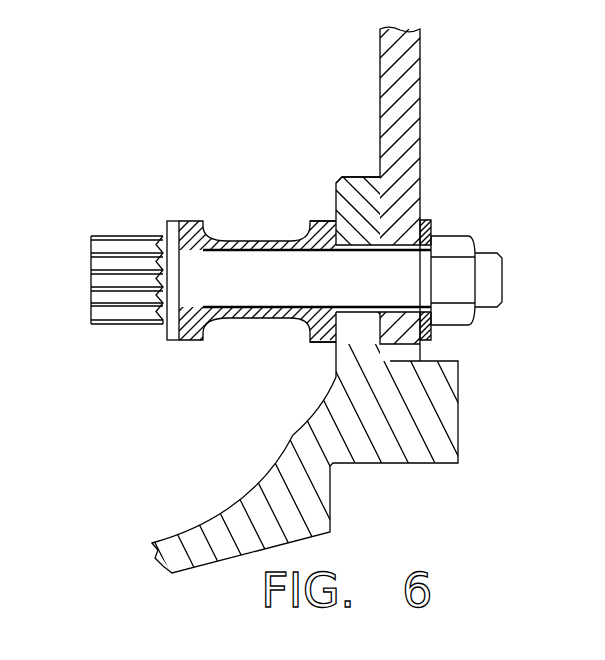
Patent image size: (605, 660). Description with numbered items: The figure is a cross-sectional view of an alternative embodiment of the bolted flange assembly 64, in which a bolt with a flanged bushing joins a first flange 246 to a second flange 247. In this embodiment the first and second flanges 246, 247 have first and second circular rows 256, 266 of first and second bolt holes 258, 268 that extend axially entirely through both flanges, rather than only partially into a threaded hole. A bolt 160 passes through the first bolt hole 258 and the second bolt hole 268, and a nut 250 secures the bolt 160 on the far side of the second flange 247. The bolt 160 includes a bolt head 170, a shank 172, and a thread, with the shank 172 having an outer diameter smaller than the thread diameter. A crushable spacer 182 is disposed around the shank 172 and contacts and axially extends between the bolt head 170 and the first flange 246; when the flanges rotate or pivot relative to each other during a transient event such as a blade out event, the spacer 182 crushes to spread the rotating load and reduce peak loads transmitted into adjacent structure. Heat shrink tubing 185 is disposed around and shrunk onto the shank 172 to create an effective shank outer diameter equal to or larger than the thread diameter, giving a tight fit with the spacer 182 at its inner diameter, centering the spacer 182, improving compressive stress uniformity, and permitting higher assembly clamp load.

The bolted flange assembly 64 is at (138, 492).
The bolt 160 is at (91, 262).
The bolt head 170 is at (118, 236).
The shank 172 is at (238, 272).
The crushable spacer 182 is at (227, 322).
The heat shrink tubing 185 is at (255, 243).
The first flange 246 is at (363, 177).
The second flange 247 is at (398, 110).
The nut 250 is at (463, 315).
The first circular row 256 is at (356, 307).
The first bolt hole 258 is at (310, 336).
The second circular row 266 is at (426, 342).
The second bolt hole 268 is at (420, 265).